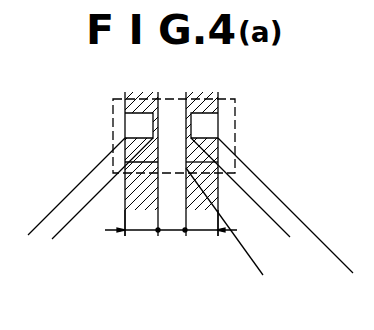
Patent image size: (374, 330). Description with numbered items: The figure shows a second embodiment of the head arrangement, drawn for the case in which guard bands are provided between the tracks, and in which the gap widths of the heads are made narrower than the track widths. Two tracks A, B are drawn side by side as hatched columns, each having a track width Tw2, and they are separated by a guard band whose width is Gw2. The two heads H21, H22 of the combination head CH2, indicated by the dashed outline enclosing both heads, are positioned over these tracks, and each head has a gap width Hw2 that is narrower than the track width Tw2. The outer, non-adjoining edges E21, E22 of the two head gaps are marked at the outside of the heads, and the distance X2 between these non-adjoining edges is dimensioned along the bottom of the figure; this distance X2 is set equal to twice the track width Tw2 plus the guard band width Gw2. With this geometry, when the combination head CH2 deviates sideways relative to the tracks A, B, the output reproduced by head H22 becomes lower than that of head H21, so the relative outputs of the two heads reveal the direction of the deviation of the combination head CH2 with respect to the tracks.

The track A is at (165, 152).
The track B is at (165, 152).
The head H21 is at (133, 123).
The head H22 is at (212, 123).
The combination head CH2 is at (235, 140).
The gap width Hw2 is at (78, 231).
The distance between non-adjoining edges X2 is at (353, 266).
The track width Tw2 is at (146, 233).
The guard band width Gw2 is at (172, 233).
The non-adjoining edge of head gap E21 is at (125, 237).
The non-adjoining edge of head gap E22 is at (217, 237).